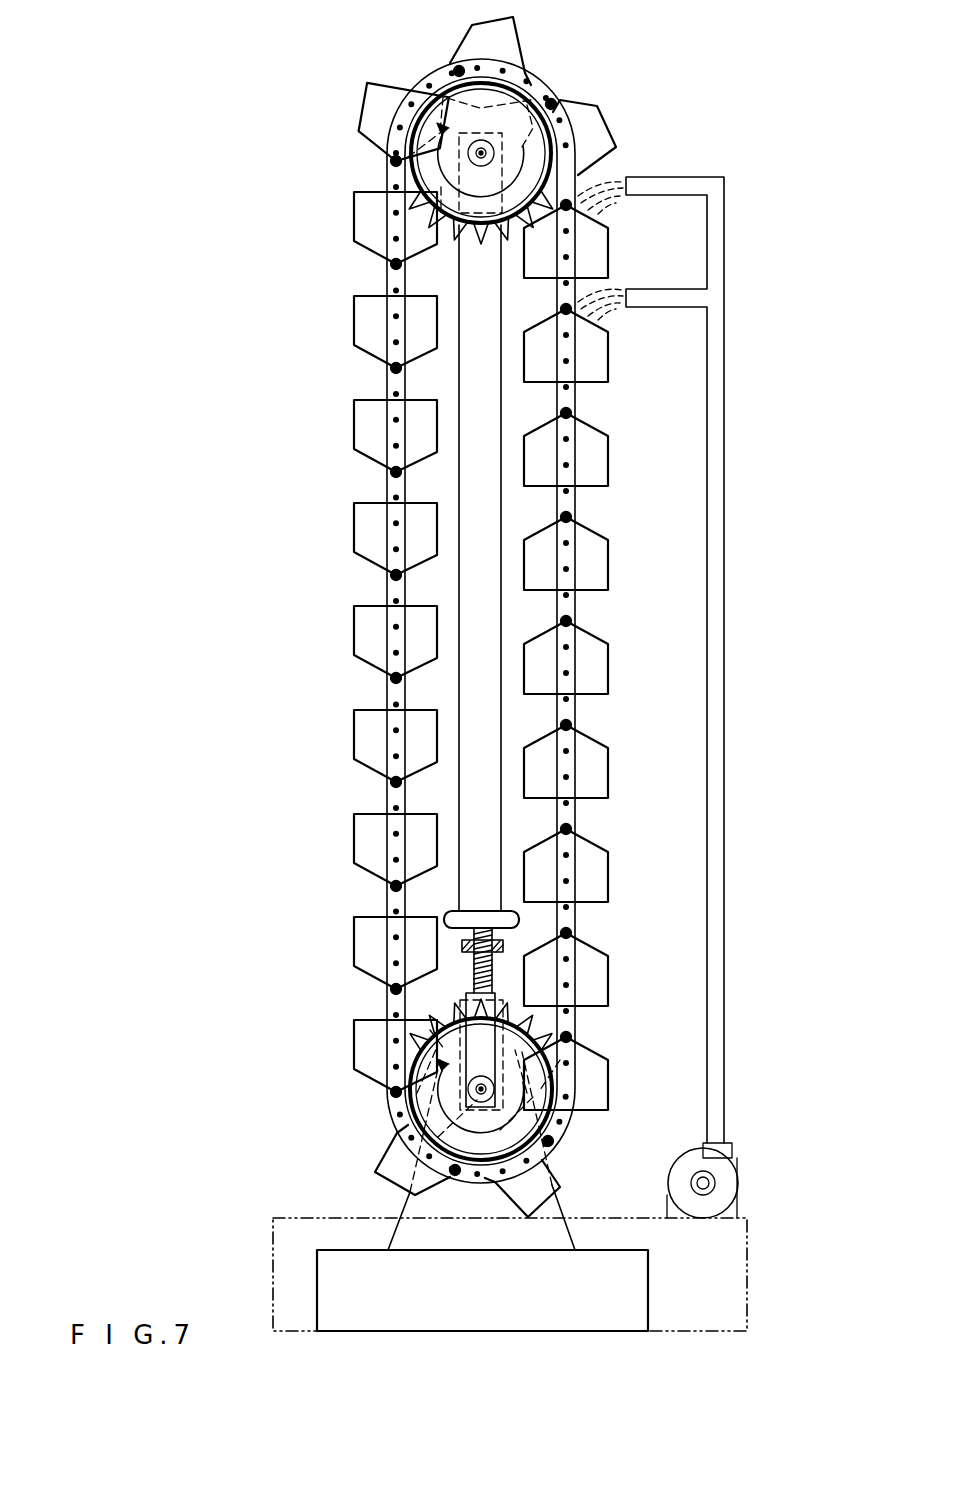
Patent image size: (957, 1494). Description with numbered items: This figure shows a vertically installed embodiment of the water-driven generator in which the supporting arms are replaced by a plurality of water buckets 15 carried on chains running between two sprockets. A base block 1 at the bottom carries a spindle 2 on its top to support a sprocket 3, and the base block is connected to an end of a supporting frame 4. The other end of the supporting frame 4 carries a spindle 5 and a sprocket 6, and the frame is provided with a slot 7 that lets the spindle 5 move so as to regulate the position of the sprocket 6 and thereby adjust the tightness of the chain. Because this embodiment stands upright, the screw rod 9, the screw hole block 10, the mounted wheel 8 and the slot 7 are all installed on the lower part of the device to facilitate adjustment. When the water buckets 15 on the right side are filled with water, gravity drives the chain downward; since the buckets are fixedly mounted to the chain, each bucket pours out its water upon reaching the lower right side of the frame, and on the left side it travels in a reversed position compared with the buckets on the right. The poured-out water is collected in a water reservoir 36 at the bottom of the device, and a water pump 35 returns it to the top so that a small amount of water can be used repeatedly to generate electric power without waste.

The base block 1 is at (552, 1210).
The spindle 2 is at (497, 1090).
The sprocket 3 is at (398, 1093).
The supporting frame 4 is at (465, 383).
The spindle 5 is at (476, 152).
The sprocket 6 is at (447, 82).
The slot 7 is at (478, 1058).
The mounted wheel 8 is at (445, 915).
The screw rod 9 is at (476, 965).
The screw hole block 10 is at (462, 947).
The water bucket 15 is at (604, 468).
The water pump 35 is at (732, 1190).
The water reservoir 36 is at (735, 1275).